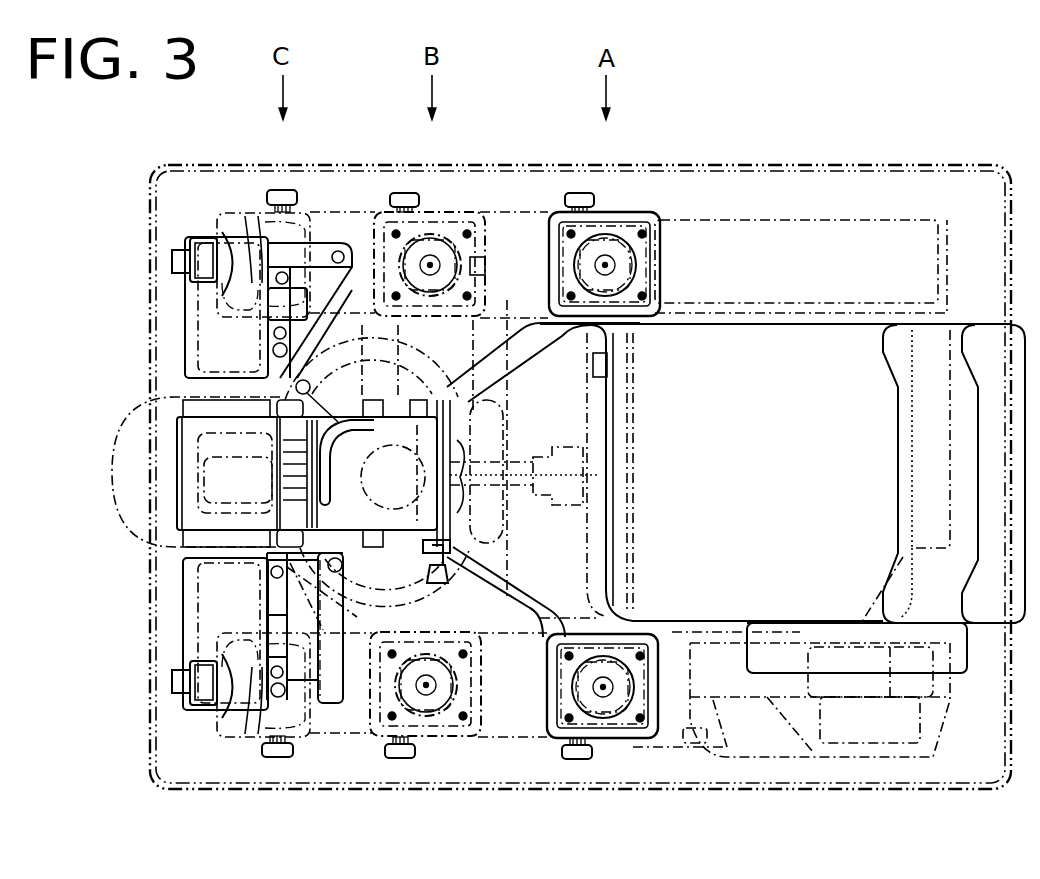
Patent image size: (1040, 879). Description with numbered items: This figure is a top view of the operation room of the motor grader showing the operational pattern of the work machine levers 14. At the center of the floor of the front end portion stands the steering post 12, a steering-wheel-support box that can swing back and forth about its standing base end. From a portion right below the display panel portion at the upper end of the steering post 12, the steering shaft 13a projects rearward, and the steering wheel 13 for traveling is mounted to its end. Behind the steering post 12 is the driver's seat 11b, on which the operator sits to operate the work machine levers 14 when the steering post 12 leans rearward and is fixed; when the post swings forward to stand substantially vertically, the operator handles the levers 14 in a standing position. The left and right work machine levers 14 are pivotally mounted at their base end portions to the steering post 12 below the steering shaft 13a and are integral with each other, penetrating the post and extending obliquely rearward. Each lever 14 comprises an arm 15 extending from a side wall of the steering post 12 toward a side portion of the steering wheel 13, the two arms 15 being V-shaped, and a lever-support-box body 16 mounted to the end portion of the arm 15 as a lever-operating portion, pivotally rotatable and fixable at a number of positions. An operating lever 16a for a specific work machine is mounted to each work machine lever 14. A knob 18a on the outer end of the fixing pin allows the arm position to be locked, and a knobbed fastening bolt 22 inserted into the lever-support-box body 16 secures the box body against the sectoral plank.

The driver's seat 11b is at (987, 340).
The steering post 12 is at (402, 420).
The steering wheel 13 is at (582, 413).
The steering shaft 13a is at (515, 463).
The work machine levers 14 is at (534, 716).
The arms 15 is at (527, 340).
The lever-support-box bodies 16 is at (648, 213).
The operating lever 16a is at (172, 262).
The knob 18a is at (438, 586).
The fastening bolt 22 is at (565, 197).